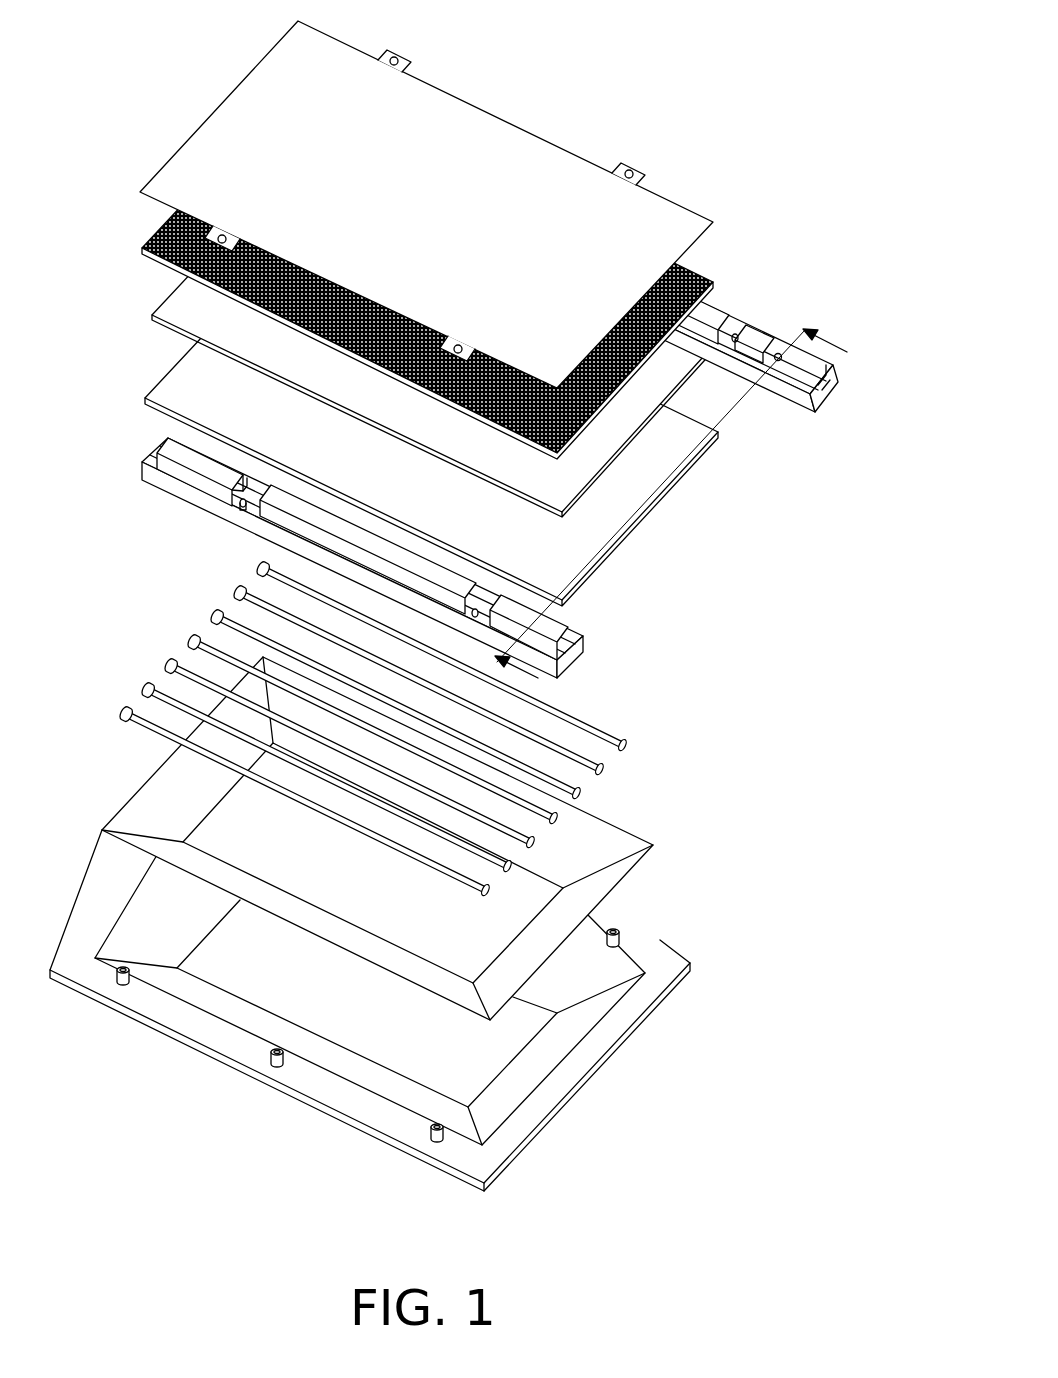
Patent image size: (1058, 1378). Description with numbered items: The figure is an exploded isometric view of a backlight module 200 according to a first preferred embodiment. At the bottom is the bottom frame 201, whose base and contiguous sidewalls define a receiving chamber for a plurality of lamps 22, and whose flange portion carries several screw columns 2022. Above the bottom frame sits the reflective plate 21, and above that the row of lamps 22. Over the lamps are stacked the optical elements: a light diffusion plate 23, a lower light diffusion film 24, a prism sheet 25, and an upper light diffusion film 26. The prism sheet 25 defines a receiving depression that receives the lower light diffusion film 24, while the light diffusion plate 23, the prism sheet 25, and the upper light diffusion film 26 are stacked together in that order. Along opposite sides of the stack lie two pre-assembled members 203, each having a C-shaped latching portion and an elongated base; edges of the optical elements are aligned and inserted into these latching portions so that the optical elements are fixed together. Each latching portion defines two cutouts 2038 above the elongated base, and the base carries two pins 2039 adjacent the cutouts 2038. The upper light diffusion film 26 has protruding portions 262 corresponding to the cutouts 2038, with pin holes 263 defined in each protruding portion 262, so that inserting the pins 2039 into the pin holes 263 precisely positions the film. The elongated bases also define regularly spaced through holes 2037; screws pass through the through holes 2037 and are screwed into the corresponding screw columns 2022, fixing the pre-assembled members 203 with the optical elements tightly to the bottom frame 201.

The backlight module 200 is at (549, 93).
The bottom frame 201 is at (660, 960).
The screw column 2022 is at (270, 1066).
The reflective plate 21 is at (596, 840).
The lamps 22 is at (630, 745).
The light diffusion plate 23 is at (657, 494).
The lower light diffusion film 24 is at (178, 308).
The prism sheet 25 is at (705, 273).
The upper light diffusion film 26 is at (471, 204).
The protruding portions 262 is at (641, 170).
The pin holes 263 is at (628, 166).
The pre-assembled member 203 is at (510, 479).
The through holes 2037 is at (778, 354).
The cutouts 2038 is at (243, 492).
The pins 2039 is at (243, 507).